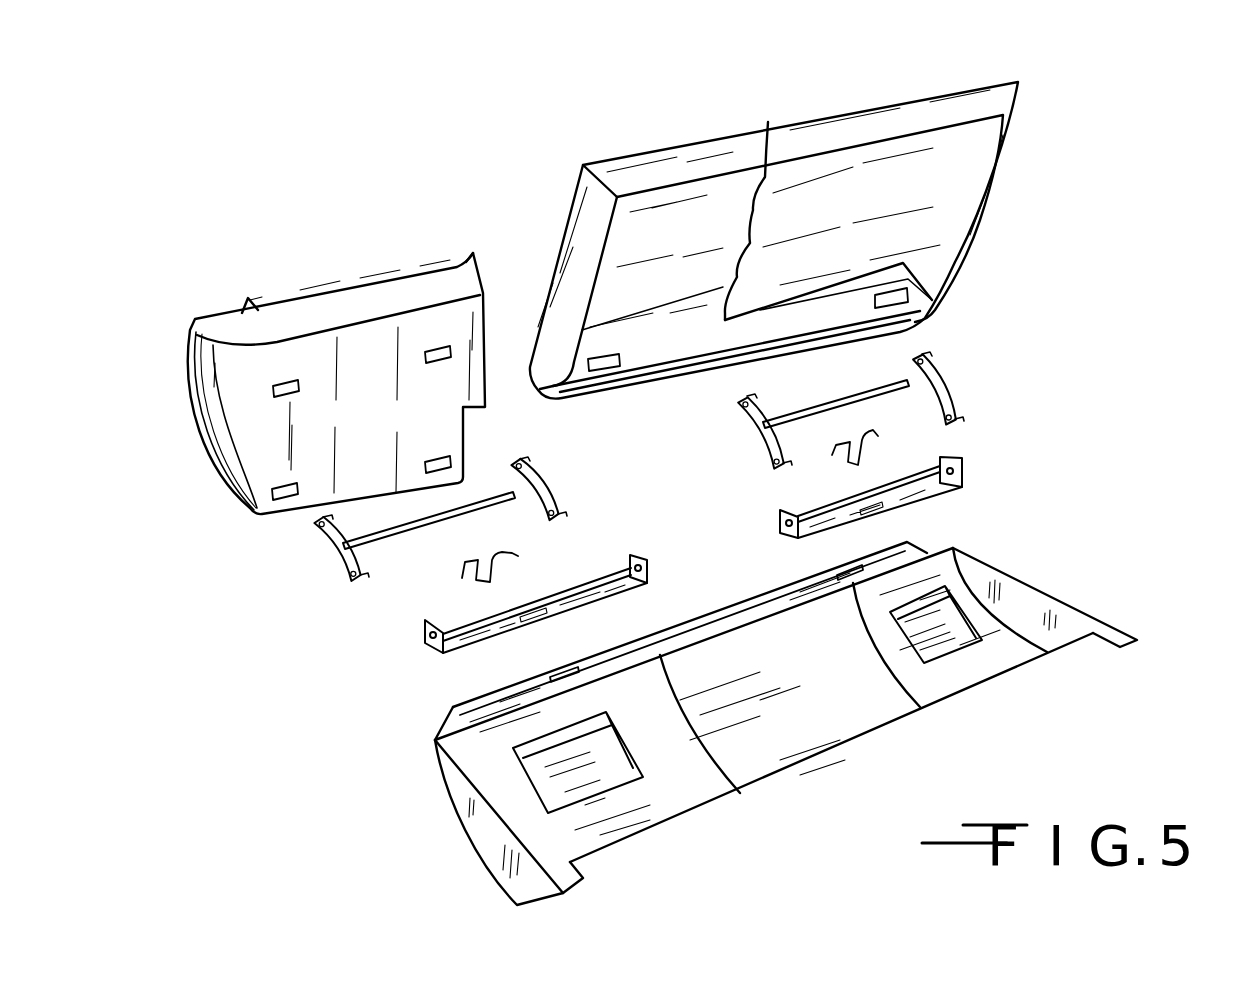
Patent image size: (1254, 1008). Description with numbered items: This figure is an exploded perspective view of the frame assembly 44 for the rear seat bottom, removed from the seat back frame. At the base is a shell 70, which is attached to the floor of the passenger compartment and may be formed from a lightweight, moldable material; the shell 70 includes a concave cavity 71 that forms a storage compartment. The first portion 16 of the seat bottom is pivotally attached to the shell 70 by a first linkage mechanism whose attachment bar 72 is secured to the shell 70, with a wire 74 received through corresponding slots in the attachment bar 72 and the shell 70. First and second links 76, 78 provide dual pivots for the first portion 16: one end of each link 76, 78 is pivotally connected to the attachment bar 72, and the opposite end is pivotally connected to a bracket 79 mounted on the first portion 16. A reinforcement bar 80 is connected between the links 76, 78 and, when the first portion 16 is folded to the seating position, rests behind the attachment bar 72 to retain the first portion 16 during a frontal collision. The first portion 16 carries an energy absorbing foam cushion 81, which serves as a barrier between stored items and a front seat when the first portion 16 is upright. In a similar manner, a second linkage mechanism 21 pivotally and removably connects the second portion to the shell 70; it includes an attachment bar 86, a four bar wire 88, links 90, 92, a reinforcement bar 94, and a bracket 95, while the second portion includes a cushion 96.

The first portion 16 is at (882, 441).
The second linkage mechanism 21 is at (445, 582).
The frame assembly 44 is at (881, 221).
The shell 70 is at (786, 687).
The concave cavity 71 is at (670, 795).
The attachment bar 72 is at (823, 510).
The wire 74 is at (878, 432).
The first link 76 is at (750, 437).
The second link 78 is at (927, 383).
The bracket 79 is at (930, 267).
The reinforcement bar 80 is at (783, 407).
The energy absorbing foam cushion 81 is at (810, 147).
The attachment bar 86 is at (460, 653).
The 4 bar wire 88 is at (518, 555).
The link 90 is at (313, 543).
The link 92 is at (540, 497).
The reinforcement bar 94 is at (413, 530).
The bracket 95 is at (270, 497).
The cushion 96 is at (336, 389).